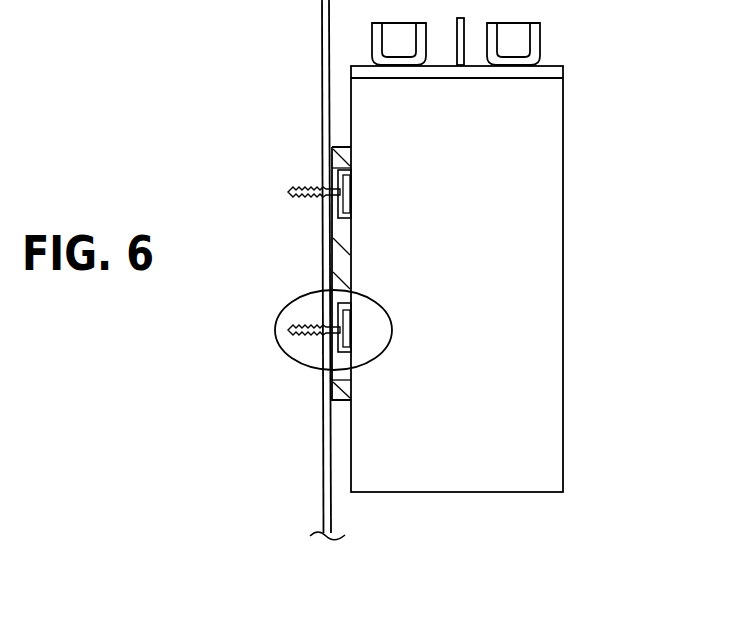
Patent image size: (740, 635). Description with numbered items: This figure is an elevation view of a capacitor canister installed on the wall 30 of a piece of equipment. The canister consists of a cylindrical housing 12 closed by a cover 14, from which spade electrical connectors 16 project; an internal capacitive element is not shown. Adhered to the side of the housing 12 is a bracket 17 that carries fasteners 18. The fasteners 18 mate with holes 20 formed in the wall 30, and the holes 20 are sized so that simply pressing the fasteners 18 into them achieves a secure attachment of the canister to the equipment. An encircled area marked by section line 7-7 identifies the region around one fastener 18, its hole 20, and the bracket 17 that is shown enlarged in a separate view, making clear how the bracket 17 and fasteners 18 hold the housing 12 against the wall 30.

The wall 30 is at (322, 22).
The cylindrical housing 12 is at (546, 153).
The cover 14 is at (553, 73).
The spade electrical connectors 16 is at (540, 32).
The bracket 17 is at (346, 259).
The holes 20 is at (330, 180).
The fasteners 18 is at (293, 190).
The section line 7-7 is at (278, 343).